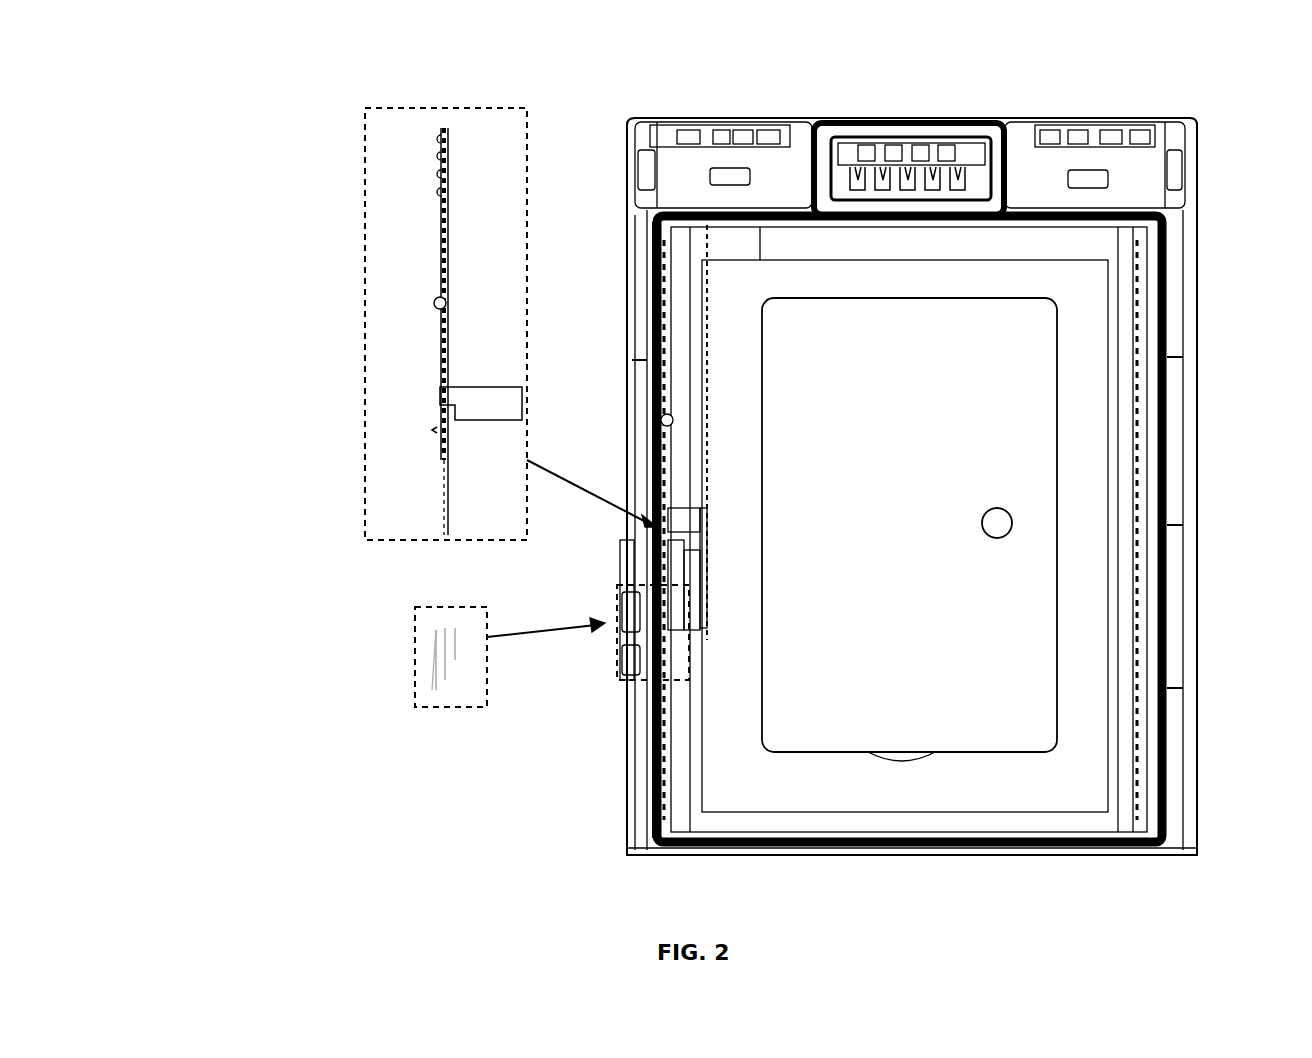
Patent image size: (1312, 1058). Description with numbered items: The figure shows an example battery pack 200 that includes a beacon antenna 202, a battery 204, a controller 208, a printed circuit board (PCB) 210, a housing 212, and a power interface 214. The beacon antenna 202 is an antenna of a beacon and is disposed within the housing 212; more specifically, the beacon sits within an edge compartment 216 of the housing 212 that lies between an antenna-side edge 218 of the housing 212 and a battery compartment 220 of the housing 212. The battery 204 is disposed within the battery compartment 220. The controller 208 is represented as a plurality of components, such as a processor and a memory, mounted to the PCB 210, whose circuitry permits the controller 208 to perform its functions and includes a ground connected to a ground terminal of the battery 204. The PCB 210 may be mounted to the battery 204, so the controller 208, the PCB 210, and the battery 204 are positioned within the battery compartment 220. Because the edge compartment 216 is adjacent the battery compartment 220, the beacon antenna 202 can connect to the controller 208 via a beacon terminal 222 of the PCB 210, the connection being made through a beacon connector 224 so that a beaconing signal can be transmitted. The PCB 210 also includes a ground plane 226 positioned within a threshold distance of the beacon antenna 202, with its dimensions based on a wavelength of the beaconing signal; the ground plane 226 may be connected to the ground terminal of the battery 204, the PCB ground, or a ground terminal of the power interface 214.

The battery pack 200 is at (222, 70).
The beacon antenna 202 is at (435, 668).
The battery 204 is at (869, 792).
The controller 208 is at (415, 207).
The printed circuit board (PCB) 210 is at (995, 820).
The housing 212 is at (1180, 337).
The power interface 214 is at (930, 140).
The edge compartment 216 is at (630, 675).
The antenna-side edge 218 is at (622, 845).
The battery compartment 220 is at (1130, 830).
The beacon terminal 222 is at (650, 540).
The beacon connector 224 is at (460, 640).
The ground plane 226 is at (500, 400).